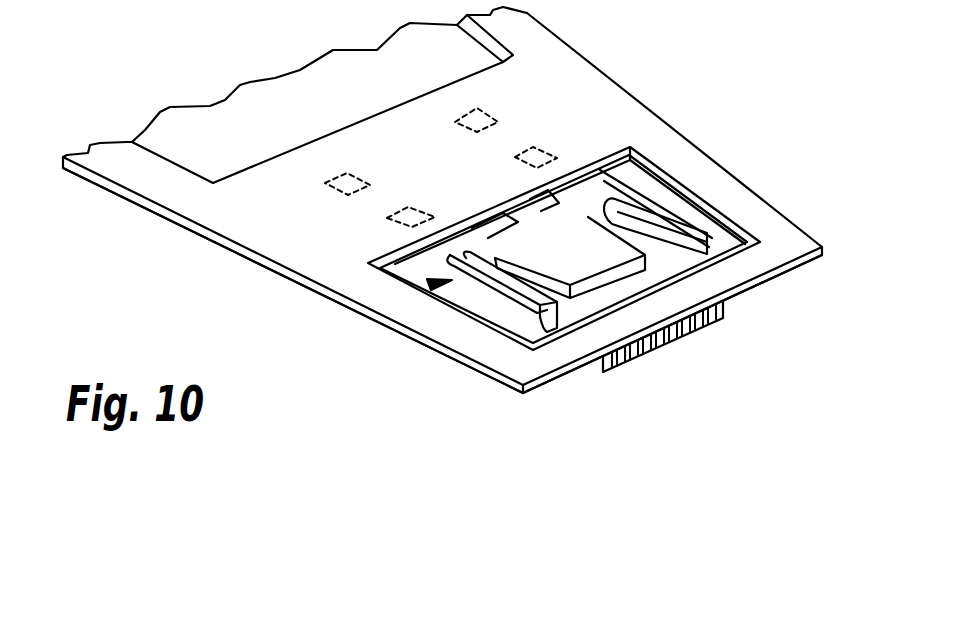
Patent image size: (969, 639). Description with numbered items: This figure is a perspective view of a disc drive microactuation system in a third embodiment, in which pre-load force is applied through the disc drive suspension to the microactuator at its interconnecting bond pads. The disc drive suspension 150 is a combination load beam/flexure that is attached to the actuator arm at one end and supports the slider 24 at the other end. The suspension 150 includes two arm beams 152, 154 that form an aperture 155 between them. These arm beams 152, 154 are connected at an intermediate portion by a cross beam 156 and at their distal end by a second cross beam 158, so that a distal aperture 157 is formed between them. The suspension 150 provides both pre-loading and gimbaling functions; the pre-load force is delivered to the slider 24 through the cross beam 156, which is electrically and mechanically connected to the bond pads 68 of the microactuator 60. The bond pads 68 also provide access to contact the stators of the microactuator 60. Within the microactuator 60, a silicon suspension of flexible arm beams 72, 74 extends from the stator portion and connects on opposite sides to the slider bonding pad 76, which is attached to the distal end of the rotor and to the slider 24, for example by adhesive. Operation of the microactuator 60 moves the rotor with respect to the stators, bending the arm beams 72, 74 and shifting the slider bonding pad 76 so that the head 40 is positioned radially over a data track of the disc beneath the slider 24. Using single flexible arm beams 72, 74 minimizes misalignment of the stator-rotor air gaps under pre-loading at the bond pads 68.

The disc drive suspension 150 is at (567, 51).
The arm beam 152 is at (525, 30).
The arm beam 154 is at (132, 173).
The aperture 155 is at (170, 130).
The cross beam 156 is at (363, 137).
The distal aperture 157 is at (632, 288).
The cross beam 158 is at (740, 266).
The bond pads 68 is at (423, 212).
The microactuator 60 is at (432, 284).
The flexible arm beam 72 is at (512, 313).
The flexible arm beam 74 is at (733, 232).
The slider bonding pad 76 is at (597, 247).
The head 40 is at (707, 320).
The slider 24 is at (667, 333).